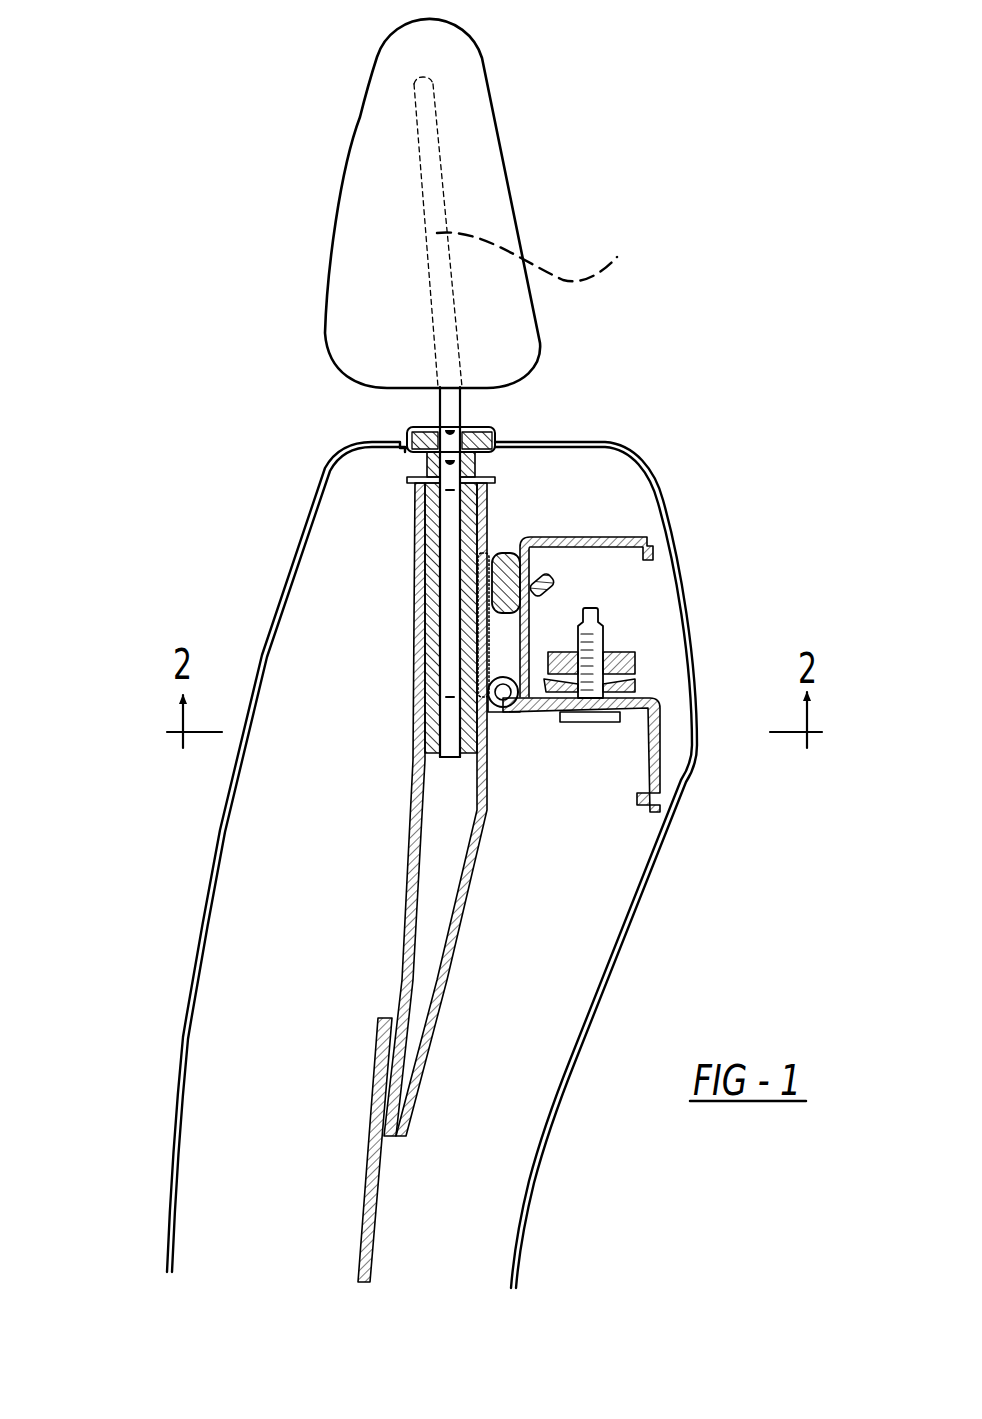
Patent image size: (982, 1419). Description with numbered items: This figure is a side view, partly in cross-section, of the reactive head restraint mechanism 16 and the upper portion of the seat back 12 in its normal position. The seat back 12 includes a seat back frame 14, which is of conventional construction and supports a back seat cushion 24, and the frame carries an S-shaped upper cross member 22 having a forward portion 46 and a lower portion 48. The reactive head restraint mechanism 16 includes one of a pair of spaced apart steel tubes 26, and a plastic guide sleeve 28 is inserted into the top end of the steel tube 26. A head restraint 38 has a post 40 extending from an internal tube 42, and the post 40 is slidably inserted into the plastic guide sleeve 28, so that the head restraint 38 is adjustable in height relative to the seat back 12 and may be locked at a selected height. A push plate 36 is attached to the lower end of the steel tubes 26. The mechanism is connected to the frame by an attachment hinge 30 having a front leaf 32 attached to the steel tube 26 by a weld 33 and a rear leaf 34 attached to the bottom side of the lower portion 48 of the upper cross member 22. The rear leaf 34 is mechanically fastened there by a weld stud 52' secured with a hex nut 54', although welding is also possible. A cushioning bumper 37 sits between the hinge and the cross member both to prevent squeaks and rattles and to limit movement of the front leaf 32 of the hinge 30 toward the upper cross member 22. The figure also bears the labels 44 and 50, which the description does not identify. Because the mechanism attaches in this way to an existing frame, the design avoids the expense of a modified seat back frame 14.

The seat back 12 is at (180, 820).
The seat back frame 14 is at (662, 545).
The reactive head restraint mechanism 16 is at (404, 952).
The upper cross member 22 is at (650, 540).
The back seat cushion 24 is at (258, 1098).
The steel tube 26 is at (400, 917).
The plastic guide sleeve 28 is at (436, 497).
The attachment hinge 30 is at (478, 650).
The front leaf 32 is at (490, 562).
The weld 33 is at (478, 600).
The rear leaf 34 is at (535, 713).
The push plate 36 is at (368, 1194).
The cushioning bumper 37 is at (515, 558).
The head restraint 38 is at (468, 110).
The post 40 is at (448, 402).
The internal tube 42 is at (535, 252).
The mounting channel 44 is at (590, 537).
The forward portion 46 is at (529, 622).
The lower portion 48 is at (632, 682).
The mounting bracket 50 is at (664, 766).
The weld stud 52' is at (673, 578).
The hex nut 54' is at (654, 636).